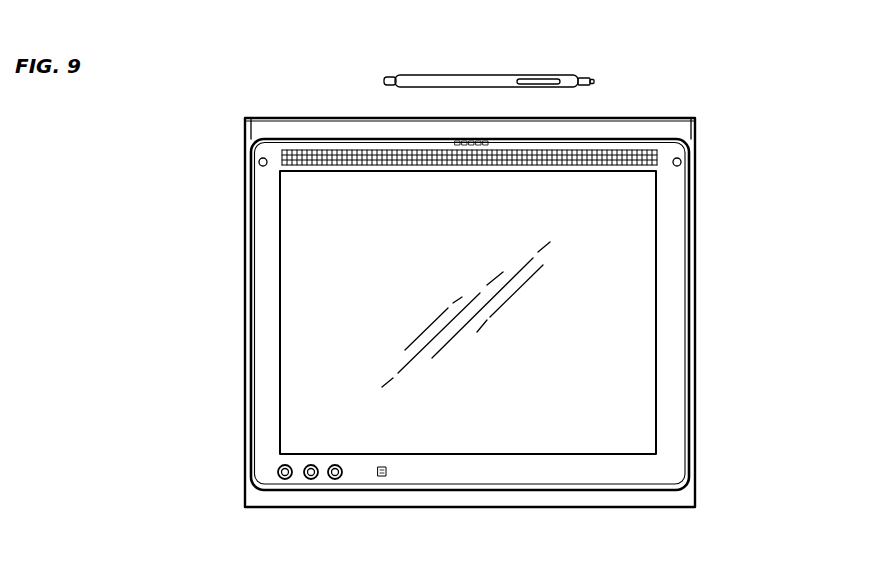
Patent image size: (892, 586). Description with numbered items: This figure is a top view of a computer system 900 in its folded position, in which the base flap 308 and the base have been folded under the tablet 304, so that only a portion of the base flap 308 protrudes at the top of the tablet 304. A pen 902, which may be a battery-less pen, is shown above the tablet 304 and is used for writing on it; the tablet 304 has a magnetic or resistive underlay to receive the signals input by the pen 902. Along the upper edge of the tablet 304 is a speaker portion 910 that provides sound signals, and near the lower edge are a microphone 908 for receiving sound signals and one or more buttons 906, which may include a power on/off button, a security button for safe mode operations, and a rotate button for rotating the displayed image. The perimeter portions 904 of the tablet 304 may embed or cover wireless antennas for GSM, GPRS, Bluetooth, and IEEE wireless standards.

The computer system 900 is at (766, 150).
The base flap 308 is at (259, 127).
The perimeter portions 904 is at (644, 142).
The tablet 304 is at (268, 232).
The speaker portion 910 is at (331, 154).
The buttons 906 is at (285, 479).
The microphone 908 is at (383, 478).
The pen 902 is at (413, 80).